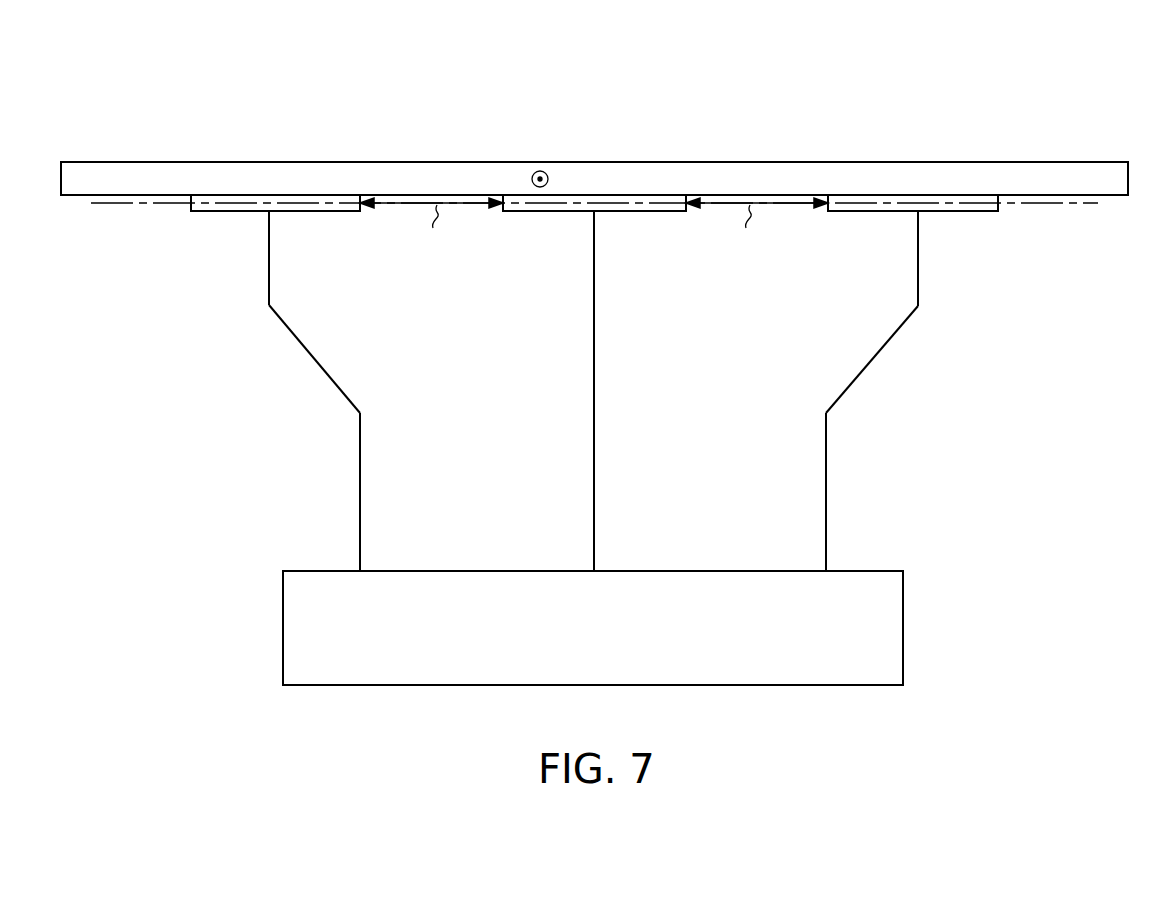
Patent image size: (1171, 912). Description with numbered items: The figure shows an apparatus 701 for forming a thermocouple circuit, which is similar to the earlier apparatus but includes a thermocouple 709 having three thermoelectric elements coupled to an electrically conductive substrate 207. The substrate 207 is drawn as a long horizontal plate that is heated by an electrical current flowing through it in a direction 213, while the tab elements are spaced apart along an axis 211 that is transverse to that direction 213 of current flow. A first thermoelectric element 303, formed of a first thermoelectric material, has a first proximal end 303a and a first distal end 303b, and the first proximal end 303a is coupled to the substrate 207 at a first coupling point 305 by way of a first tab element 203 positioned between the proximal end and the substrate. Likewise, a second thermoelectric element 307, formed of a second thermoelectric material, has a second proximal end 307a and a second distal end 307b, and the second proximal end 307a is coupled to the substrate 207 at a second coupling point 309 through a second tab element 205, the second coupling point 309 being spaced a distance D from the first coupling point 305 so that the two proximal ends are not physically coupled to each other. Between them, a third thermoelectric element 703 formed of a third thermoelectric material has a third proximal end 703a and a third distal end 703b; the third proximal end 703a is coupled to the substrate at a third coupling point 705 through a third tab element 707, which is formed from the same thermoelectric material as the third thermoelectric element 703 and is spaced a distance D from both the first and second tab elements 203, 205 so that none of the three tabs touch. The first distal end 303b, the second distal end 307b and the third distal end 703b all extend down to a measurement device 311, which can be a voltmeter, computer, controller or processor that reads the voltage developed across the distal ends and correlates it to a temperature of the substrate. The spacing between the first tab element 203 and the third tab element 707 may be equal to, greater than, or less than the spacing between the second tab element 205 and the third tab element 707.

The apparatus 701 is at (513, 104).
The electrically conductive substrate 207 is at (1092, 162).
The first coupling point 305 is at (262, 184).
The second coupling point 309 is at (928, 184).
The third coupling point 705 is at (598, 188).
The direction of the electrical current flow 213 is at (540, 175).
The axis 211 is at (1079, 206).
The first tab element 203 is at (237, 211).
The third tab element 707 is at (646, 211).
The second tab element 205 is at (960, 211).
The first thermoelectric element 303 is at (267, 391).
The first proximal end 303a is at (269, 290).
The first distal end 303b is at (360, 500).
The third thermoelectric element 703 is at (549, 391).
The third proximal end 703a is at (594, 231).
The third distal end 703b is at (594, 500).
The second thermoelectric element 307 is at (920, 391).
The second proximal end 307a is at (918, 290).
The second distal end 307b is at (826, 500).
The measurement device 311 is at (903, 622).
The thermocouple 709 is at (1050, 411).